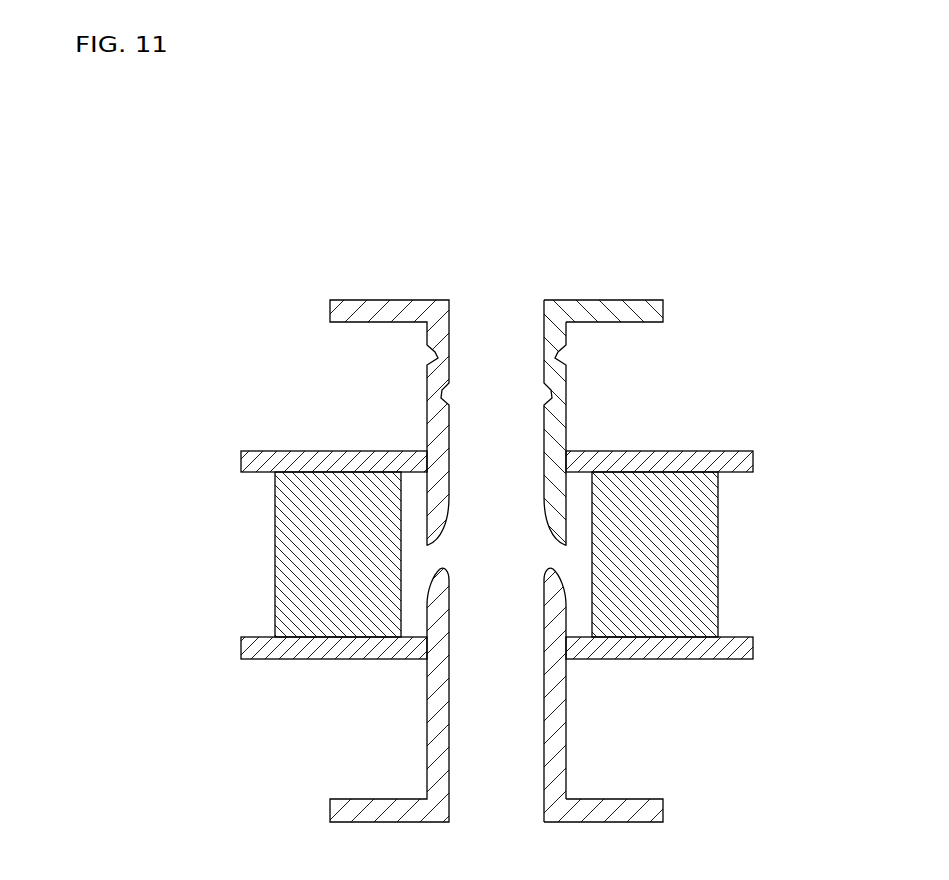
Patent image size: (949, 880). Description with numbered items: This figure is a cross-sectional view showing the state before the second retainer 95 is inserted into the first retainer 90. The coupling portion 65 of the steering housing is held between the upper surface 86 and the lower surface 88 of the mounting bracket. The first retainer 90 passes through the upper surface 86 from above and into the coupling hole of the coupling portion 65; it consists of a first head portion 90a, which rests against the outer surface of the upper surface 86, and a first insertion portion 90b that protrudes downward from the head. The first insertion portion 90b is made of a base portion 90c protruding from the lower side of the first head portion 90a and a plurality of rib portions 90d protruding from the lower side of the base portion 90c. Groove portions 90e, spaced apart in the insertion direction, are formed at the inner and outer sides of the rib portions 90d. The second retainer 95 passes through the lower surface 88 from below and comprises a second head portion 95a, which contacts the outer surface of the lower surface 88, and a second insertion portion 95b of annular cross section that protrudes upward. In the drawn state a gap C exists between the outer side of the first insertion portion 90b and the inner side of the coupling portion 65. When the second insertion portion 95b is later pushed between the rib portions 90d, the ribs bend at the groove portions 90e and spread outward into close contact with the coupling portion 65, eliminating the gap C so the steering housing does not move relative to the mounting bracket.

The coupling portion 65 is at (700, 555).
The upper surface 86 is at (258, 460).
The lower surface 88 is at (262, 651).
The first retainer 90 is at (554, 350).
The first head portion 90a is at (647, 313).
The first insertion portion 90b is at (710, 387).
The base portion 90c is at (562, 338).
The rib portions 90d is at (557, 443).
The groove portions 90e is at (450, 393).
The second retainer 95 is at (627, 696).
The second head portion 95a is at (647, 810).
The second insertion portion 95b is at (557, 722).
The gap C is at (592, 527).